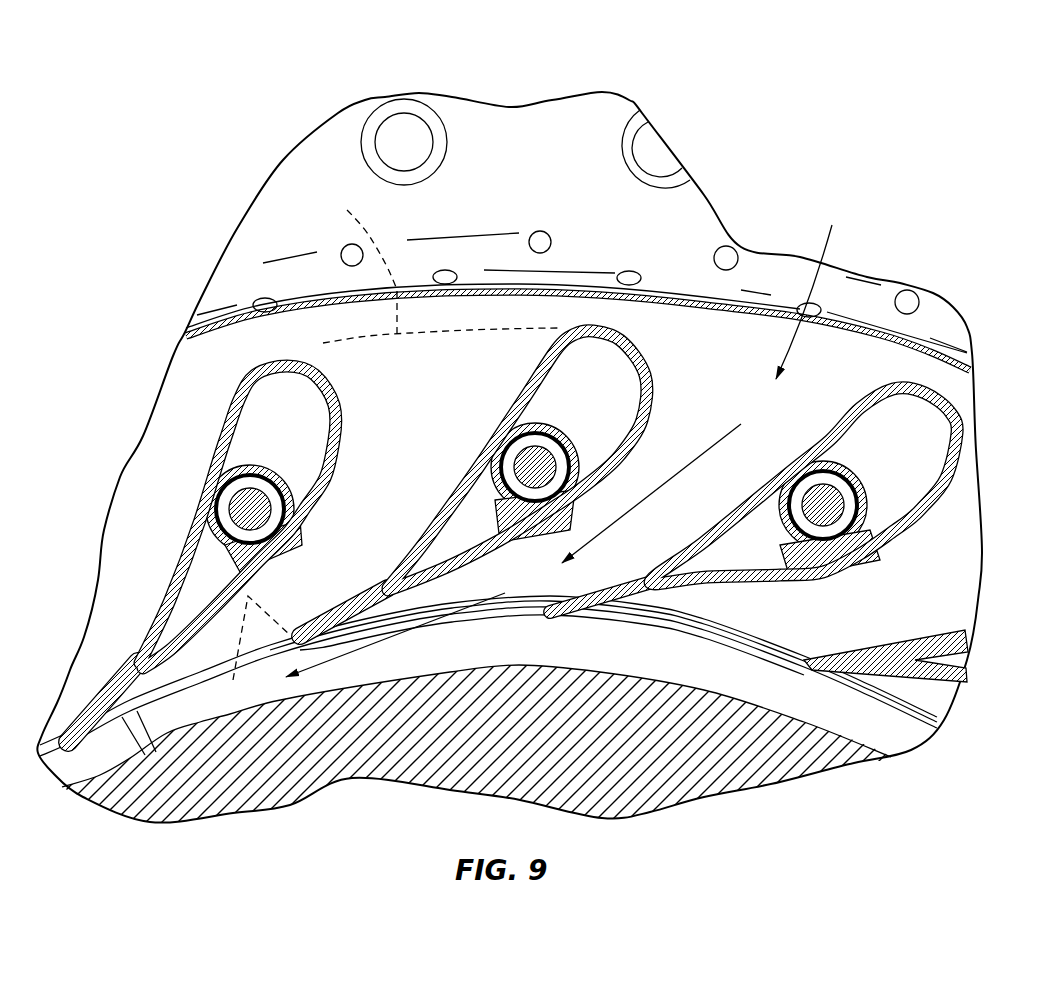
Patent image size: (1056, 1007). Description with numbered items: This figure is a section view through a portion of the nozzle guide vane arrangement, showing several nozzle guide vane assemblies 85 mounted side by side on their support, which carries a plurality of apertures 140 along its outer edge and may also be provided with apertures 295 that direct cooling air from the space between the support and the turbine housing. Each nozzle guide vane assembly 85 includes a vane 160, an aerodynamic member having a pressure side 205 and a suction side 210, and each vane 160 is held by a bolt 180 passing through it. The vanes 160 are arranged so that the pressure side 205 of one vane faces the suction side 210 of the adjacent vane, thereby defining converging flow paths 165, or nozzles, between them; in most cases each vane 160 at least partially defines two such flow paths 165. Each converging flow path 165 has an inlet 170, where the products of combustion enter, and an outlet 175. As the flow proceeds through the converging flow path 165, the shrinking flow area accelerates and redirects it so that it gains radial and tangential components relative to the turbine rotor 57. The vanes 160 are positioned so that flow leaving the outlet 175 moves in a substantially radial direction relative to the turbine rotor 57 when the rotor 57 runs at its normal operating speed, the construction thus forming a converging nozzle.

The turbine rotor 57 is at (744, 757).
The nozzle guide vane assembly 85 is at (513, 536).
The apertures 140 is at (403, 127).
The vane 160 is at (643, 338).
The converging flow paths 165 is at (409, 496).
The inlet 170 is at (434, 269).
The outlet 175 is at (359, 651).
The bolt 180 is at (833, 483).
The pressure side 205 is at (705, 530).
The suction side 210 is at (515, 540).
The apertures 295 is at (918, 311).